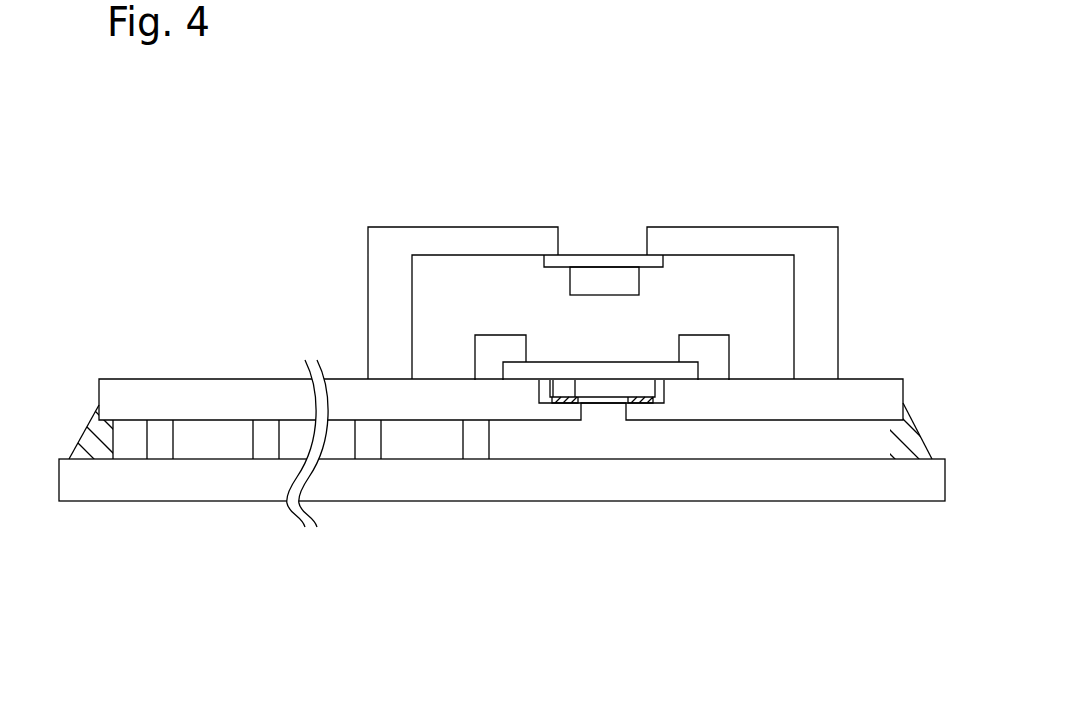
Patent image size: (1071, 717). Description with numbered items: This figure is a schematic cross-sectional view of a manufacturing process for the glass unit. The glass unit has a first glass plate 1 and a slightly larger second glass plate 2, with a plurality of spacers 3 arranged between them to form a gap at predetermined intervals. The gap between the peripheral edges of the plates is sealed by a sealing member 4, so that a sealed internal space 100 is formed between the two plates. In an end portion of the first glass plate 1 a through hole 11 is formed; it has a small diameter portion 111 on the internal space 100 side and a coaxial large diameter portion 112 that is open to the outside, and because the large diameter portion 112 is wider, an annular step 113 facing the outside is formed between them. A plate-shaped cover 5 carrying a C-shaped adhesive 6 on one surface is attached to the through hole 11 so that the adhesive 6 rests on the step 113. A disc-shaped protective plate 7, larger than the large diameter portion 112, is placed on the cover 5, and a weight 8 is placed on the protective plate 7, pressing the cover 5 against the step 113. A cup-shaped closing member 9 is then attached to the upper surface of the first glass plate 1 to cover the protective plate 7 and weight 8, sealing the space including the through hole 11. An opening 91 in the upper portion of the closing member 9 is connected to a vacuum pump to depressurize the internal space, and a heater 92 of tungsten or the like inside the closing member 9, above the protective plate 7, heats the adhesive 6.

The internal space 100 is at (778, 448).
The first glass plate 1 is at (173, 388).
The second glass plate 2 is at (362, 492).
The spacers 3 is at (267, 443).
The sealing member 4 is at (85, 428).
The cover 5 is at (641, 389).
The adhesive 6 is at (627, 398).
The protective plate 7 is at (550, 363).
The weight 8 is at (722, 353).
The closing member 9 is at (827, 307).
The opening 91 is at (562, 239).
The heater 92 is at (633, 287).
The through hole 11 is at (556, 497).
The small diameter portion 111 is at (577, 396).
The large diameter portion 112 is at (556, 395).
The step 113 is at (540, 397).